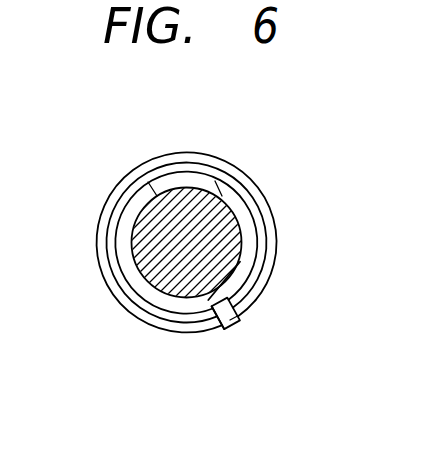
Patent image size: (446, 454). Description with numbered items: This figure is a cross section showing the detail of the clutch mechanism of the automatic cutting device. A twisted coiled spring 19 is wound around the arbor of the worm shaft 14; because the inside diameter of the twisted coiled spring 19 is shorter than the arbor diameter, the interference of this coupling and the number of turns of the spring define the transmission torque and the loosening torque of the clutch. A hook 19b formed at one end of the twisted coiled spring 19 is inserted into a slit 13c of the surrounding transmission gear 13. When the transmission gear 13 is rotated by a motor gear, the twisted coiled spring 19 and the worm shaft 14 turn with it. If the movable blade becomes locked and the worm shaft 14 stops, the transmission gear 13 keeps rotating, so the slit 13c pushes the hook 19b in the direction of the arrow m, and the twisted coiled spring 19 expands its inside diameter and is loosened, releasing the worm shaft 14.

The transmission gear 13 is at (126, 184).
The slit 13c is at (253, 306).
The worm shaft 14 is at (214, 204).
The twisted coiled spring 19 is at (252, 218).
The hook 19b is at (233, 329).
The arrow m is at (213, 331).